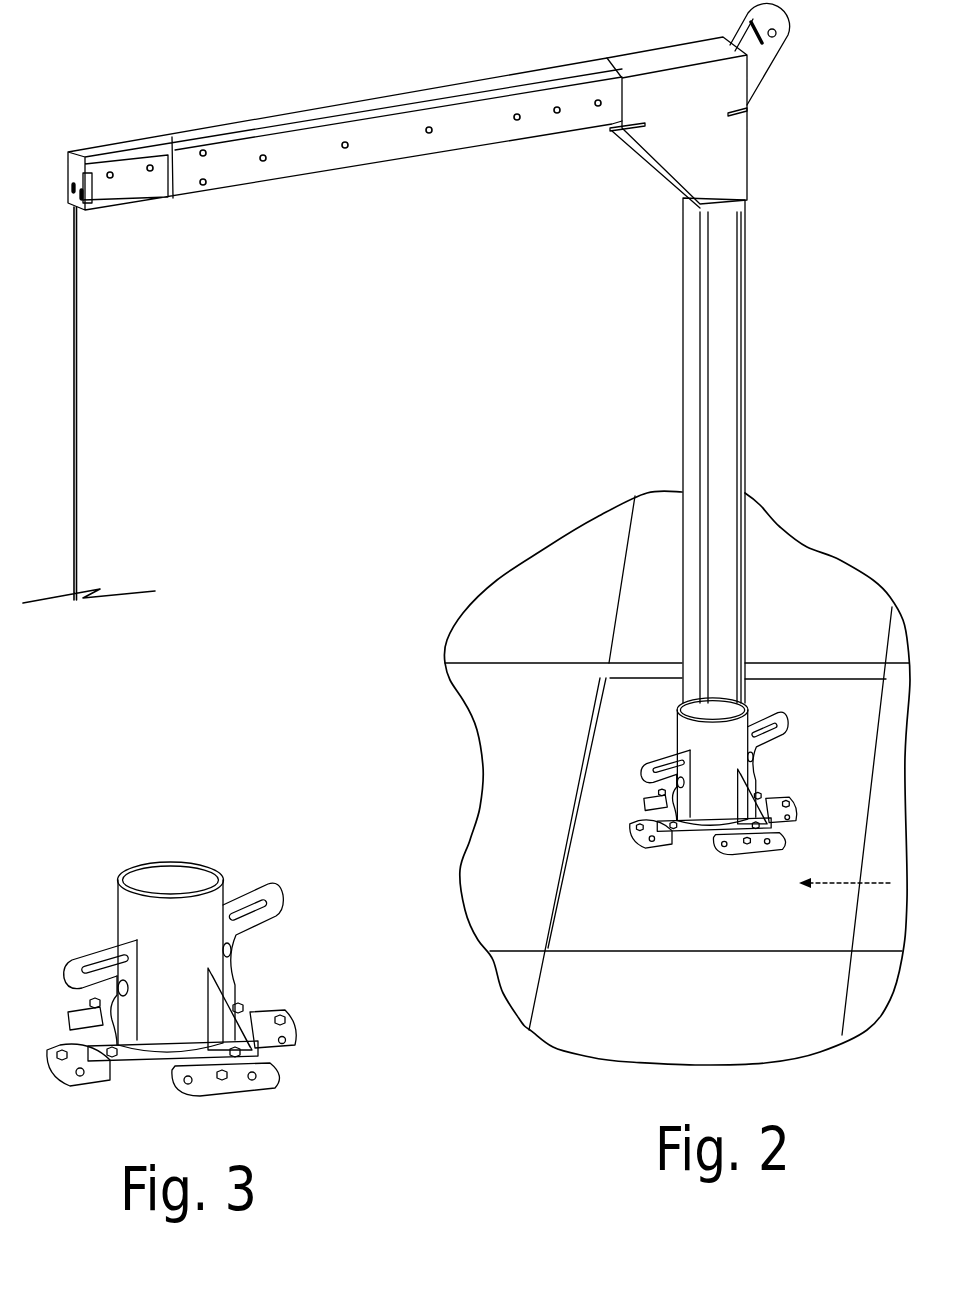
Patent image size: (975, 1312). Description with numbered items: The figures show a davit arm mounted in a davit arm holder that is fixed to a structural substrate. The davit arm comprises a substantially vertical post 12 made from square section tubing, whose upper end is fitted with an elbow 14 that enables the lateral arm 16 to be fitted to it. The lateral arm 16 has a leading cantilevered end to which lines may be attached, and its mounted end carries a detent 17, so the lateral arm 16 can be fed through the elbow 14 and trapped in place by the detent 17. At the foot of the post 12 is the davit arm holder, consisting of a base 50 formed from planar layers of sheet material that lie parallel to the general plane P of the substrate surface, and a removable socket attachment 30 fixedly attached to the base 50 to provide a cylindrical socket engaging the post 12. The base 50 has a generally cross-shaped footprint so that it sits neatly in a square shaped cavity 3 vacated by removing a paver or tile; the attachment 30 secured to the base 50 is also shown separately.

In FIG. 2, the lateral arm 16 is at (373, 137).
In FIG. 2, the detent 17 is at (758, 50).
In FIG. 2, the elbow 14 is at (722, 170).
In FIG. 2, the vertical post 12 is at (723, 363).
In FIG. 2, the attachment 30 is at (656, 725).
In FIG. 3, the attachment 30 is at (258, 958).
In FIG. 2, the base 50 is at (620, 852).
In FIG. 3, the base 50 is at (261, 1103).
In FIG. 2, the square shaped cavity 3 is at (754, 879).
In FIG. 2, the general plane P is at (832, 885).